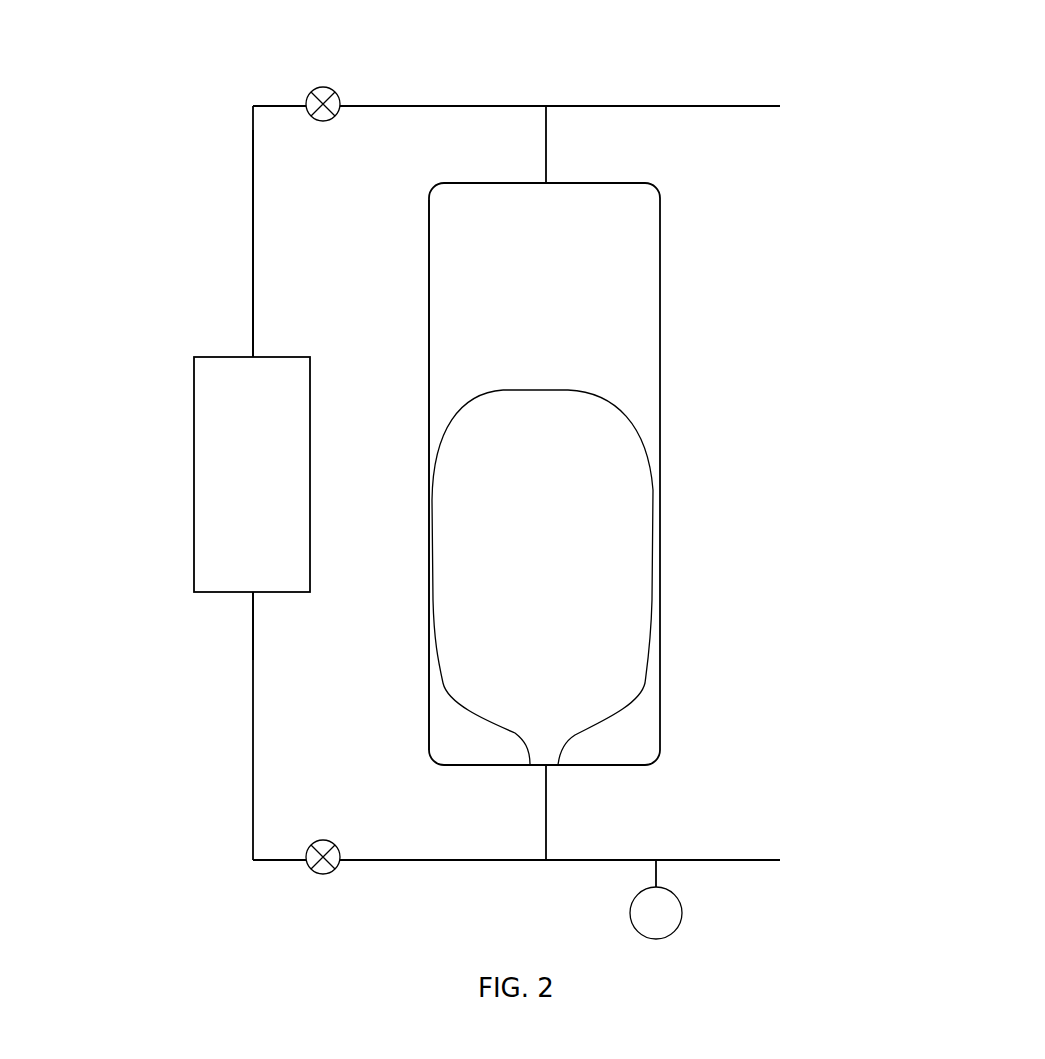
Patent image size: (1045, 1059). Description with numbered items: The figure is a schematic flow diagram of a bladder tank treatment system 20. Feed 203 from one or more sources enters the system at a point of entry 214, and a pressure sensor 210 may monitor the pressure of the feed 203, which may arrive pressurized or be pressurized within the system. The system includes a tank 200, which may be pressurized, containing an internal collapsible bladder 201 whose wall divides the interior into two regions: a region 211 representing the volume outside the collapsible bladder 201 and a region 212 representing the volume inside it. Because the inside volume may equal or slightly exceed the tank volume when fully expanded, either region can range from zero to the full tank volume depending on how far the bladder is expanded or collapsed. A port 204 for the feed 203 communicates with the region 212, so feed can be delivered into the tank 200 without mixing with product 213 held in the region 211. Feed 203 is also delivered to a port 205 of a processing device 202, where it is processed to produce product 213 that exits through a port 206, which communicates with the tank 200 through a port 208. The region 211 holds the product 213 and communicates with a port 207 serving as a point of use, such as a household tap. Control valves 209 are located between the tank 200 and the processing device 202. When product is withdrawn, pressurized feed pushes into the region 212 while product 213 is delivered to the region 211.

The bladder tank treatment system 20 is at (188, 207).
The tank 200 is at (640, 351).
The collapsible bladder 201 is at (636, 608).
The processing device 202 is at (200, 519).
The feed 203 is at (694, 885).
The port 204 is at (554, 771).
The port 205 is at (261, 601).
The port 206 is at (249, 353).
The port 207 is at (778, 126).
The port 208 is at (554, 166).
The control valves 209 is at (316, 84).
The pressure sensor 210 is at (679, 937).
The region 211 is at (632, 384).
The region 212 is at (602, 632).
The product 213 is at (266, 181).
The point of entry 214 is at (727, 828).